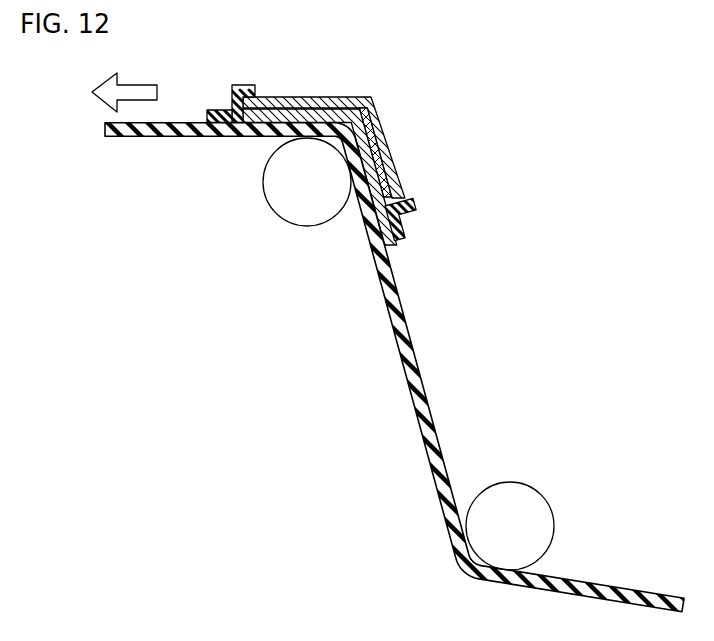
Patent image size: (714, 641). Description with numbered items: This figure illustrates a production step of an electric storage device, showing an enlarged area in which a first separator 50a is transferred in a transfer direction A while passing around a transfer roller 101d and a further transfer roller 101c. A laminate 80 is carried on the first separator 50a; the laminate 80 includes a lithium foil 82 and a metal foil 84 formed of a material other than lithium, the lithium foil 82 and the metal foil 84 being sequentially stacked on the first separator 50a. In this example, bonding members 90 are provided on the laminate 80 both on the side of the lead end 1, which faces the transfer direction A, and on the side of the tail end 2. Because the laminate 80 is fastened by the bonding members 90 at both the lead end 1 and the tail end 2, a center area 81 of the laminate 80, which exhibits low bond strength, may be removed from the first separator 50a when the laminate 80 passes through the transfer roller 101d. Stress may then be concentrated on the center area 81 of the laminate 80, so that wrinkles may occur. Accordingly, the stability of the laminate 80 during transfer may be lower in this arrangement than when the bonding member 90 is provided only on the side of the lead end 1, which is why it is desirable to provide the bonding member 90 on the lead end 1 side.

The lead end 1 is at (197, 78).
The tail end 2 is at (439, 288).
The transfer direction A is at (100, 90).
The first separator 50a is at (408, 353).
The laminate 80 is at (325, 168).
The center area 81 is at (372, 106).
The lithium foil 82 is at (367, 152).
The metal foil 84 is at (371, 128).
The bonding member 90 is at (255, 85).
The transfer roller 101c is at (528, 506).
The transfer roller 101d is at (290, 207).